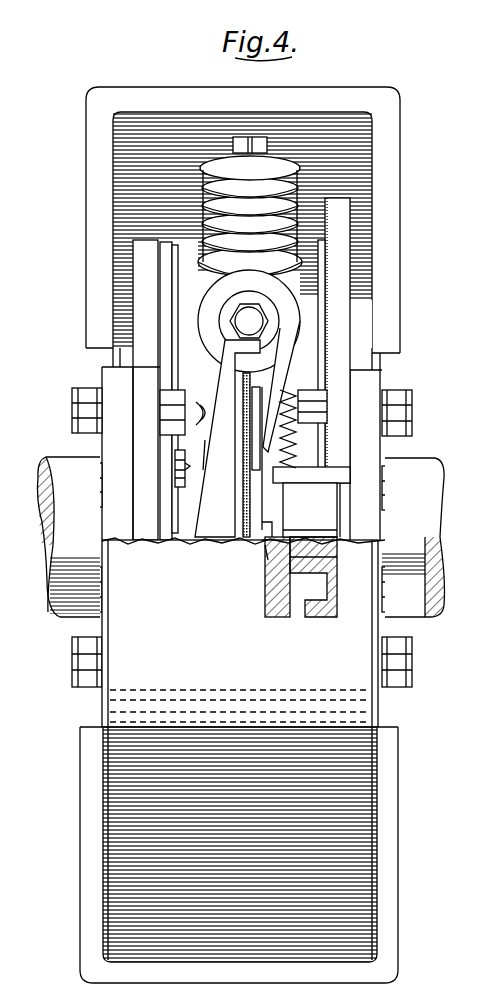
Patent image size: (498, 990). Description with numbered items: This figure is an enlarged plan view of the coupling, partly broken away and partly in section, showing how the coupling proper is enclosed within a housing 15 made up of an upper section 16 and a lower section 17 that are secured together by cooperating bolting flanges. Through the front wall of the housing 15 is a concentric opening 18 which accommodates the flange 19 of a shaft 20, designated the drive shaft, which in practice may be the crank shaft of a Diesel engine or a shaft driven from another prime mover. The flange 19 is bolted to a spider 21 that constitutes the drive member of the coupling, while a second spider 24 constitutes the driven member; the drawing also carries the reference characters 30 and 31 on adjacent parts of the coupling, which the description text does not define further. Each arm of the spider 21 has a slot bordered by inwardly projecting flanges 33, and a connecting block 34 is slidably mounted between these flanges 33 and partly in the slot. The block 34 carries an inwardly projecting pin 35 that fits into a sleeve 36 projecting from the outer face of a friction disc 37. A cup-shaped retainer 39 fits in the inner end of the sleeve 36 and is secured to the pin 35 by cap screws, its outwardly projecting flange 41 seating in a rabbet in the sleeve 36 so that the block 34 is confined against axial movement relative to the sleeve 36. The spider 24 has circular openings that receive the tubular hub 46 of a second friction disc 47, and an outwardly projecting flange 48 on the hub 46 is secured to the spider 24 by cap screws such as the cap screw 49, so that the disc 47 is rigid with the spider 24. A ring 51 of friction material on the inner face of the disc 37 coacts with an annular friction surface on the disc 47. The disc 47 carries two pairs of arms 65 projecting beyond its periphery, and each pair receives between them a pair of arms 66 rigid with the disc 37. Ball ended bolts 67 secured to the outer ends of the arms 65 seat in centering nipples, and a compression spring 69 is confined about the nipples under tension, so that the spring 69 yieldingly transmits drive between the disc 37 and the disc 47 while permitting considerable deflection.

The housing 15 is at (98, 714).
The upper section 16 is at (110, 865).
The lower section 17 is at (362, 98).
The concentric opening 18 is at (108, 353).
The flange 19 is at (373, 378).
The drive shaft 20 is at (433, 466).
The spider 21 is at (340, 287).
The second spider 24 is at (143, 328).
The left frame plate 30 is at (108, 442).
The left hub 31 is at (52, 540).
The inwardly projecting flanges 33 is at (318, 263).
The connecting block 34 is at (323, 492).
The pin 35 is at (308, 535).
The sleeve 36 is at (325, 567).
The friction disc 37 is at (262, 528).
The cup-shaped retainer 39 is at (265, 543).
The outwardly projecting flange 41 is at (268, 562).
The tubular hub 46 is at (180, 288).
The second friction disc 47 is at (215, 462).
The outwardly projecting flange 48 is at (165, 262).
The cap screw 49 is at (182, 468).
The ring 51 is at (245, 515).
The arms 65 is at (225, 386).
The arms 66 is at (228, 158).
The ball ended bolts 67 is at (252, 137).
The compression spring 69 is at (293, 217).